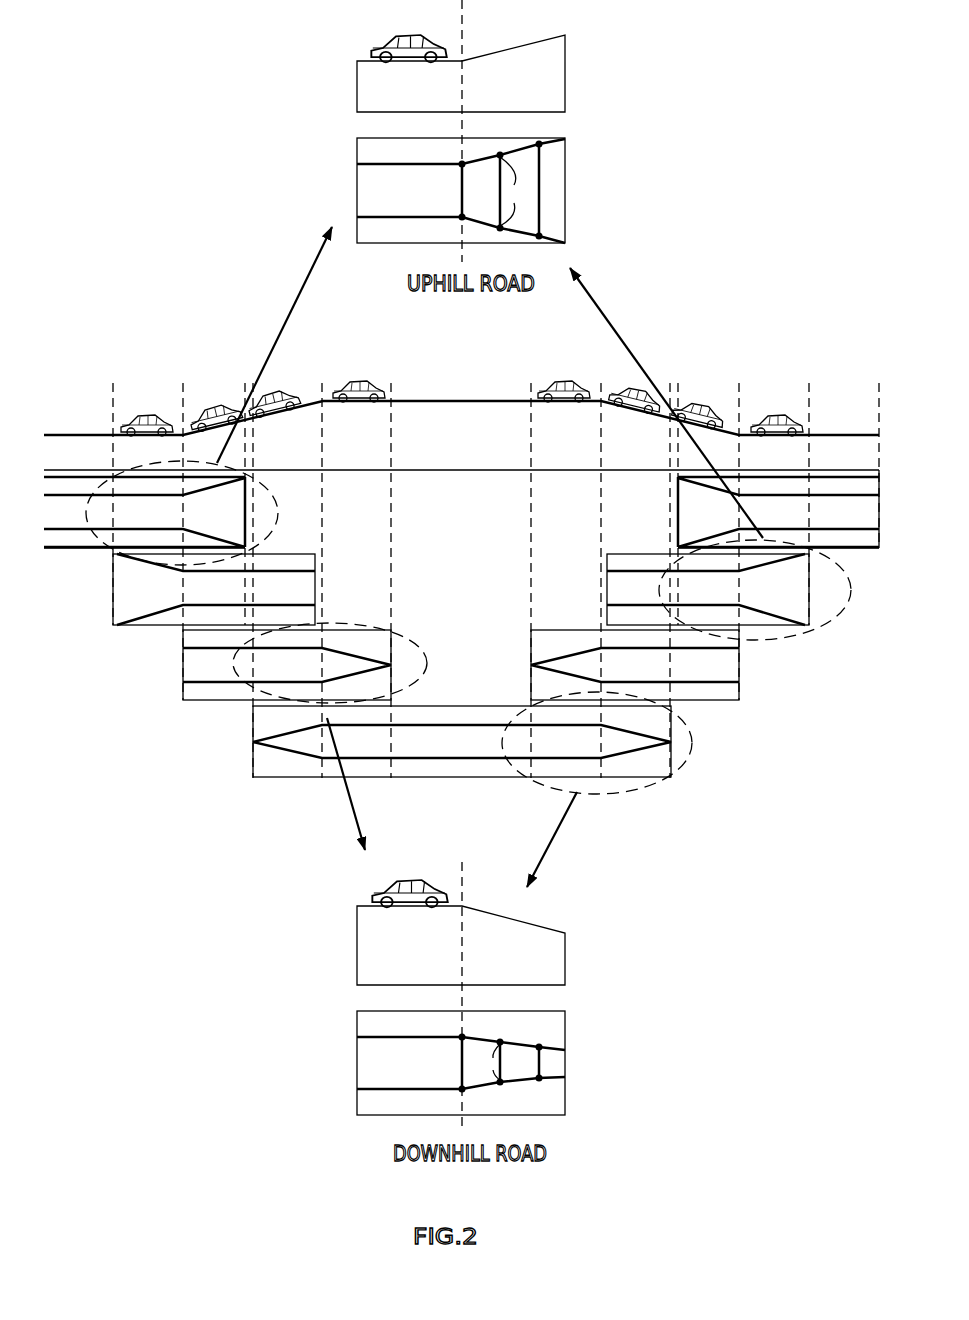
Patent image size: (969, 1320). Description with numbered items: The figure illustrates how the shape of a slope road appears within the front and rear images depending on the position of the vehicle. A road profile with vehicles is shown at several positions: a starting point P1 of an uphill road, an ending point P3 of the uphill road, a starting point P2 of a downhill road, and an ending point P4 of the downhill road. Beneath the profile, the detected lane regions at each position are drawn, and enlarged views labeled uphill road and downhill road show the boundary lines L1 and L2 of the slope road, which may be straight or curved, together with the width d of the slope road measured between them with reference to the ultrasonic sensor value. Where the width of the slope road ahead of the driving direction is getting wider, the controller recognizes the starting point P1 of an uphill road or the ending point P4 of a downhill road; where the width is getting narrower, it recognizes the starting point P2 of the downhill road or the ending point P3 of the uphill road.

The starting point of uphill road P1 is at (147, 409).
The starting point of downhill road P2 is at (247, 396).
The ending point of uphill road P3 is at (564, 380).
The ending point of downhill road P4 is at (705, 409).
The boundary line L1 is at (541, 144).
The boundary line L2 is at (541, 237).
The width of slope road d is at (499, 618).